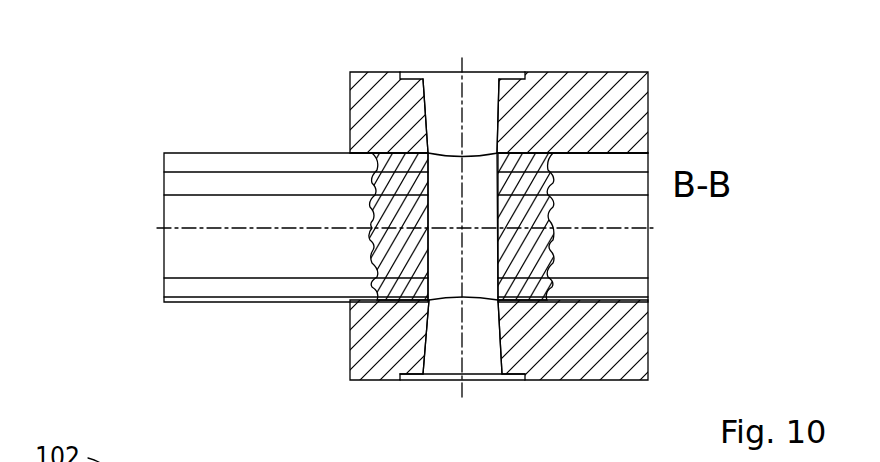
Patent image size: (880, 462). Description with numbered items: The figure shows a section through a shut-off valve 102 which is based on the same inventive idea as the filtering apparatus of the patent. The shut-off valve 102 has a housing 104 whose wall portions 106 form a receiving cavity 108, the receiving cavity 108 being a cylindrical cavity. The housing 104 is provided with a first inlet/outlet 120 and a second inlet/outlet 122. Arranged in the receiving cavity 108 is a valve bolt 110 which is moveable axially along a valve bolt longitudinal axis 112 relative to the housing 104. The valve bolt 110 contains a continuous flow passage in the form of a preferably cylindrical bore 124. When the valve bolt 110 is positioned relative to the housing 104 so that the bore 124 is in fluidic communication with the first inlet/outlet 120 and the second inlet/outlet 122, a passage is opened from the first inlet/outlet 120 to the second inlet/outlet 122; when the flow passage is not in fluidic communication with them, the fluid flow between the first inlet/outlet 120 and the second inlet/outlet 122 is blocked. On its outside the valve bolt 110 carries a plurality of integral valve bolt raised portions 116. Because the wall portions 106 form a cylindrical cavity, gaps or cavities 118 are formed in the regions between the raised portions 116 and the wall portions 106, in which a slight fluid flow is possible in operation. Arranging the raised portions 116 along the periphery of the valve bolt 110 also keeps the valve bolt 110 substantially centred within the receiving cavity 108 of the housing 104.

The shut-off valve 102 is at (175, 102).
The housing 104 is at (603, 93).
The wall portions 106 is at (618, 146).
The receiving cavity 108 is at (345, 150).
The valve bolt 110 is at (622, 263).
The valve bolt longitudinal axis 112 is at (177, 228).
The valve bolt raised portions 116 is at (203, 187).
The gaps or cavities 118 is at (615, 305).
The first inlet/outlet 120 is at (477, 362).
The second inlet/outlet 122 is at (477, 100).
The bore 124 is at (444, 172).